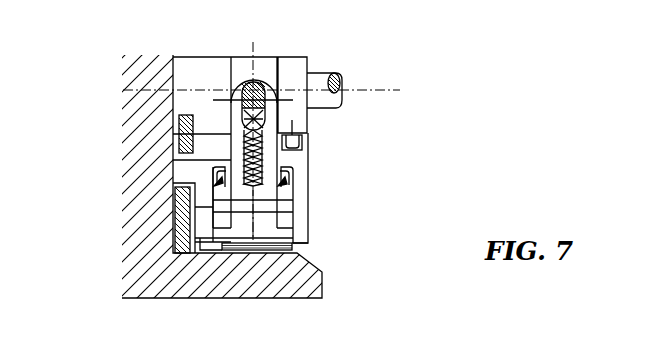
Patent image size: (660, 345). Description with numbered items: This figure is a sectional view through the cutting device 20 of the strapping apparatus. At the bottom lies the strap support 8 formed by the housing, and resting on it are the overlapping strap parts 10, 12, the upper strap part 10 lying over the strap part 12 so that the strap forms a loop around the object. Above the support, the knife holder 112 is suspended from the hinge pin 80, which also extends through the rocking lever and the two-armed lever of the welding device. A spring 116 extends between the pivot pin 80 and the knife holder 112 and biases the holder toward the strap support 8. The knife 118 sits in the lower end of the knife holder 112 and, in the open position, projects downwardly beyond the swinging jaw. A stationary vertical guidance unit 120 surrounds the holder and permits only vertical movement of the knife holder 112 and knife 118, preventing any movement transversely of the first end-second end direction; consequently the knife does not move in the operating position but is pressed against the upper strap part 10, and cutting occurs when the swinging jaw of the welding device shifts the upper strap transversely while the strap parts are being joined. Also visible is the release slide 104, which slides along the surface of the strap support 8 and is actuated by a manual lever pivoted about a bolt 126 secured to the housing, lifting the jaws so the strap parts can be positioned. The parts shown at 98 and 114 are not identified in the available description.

The strap support 8 is at (312, 282).
The hinge pin 80 is at (262, 92).
The O-ring seal 98 is at (340, 85).
The bolt 126 is at (327, 97).
The piston 114 is at (268, 122).
The spring 116 is at (302, 143).
The knife holder 112 is at (259, 187).
The stationary vertical guidance unit 120 is at (302, 216).
The release slide 104 is at (183, 213).
The cutting device 20 is at (262, 222).
The knife 118 is at (270, 252).
The upper strap part 10 is at (240, 252).
The strap part 12 is at (266, 293).